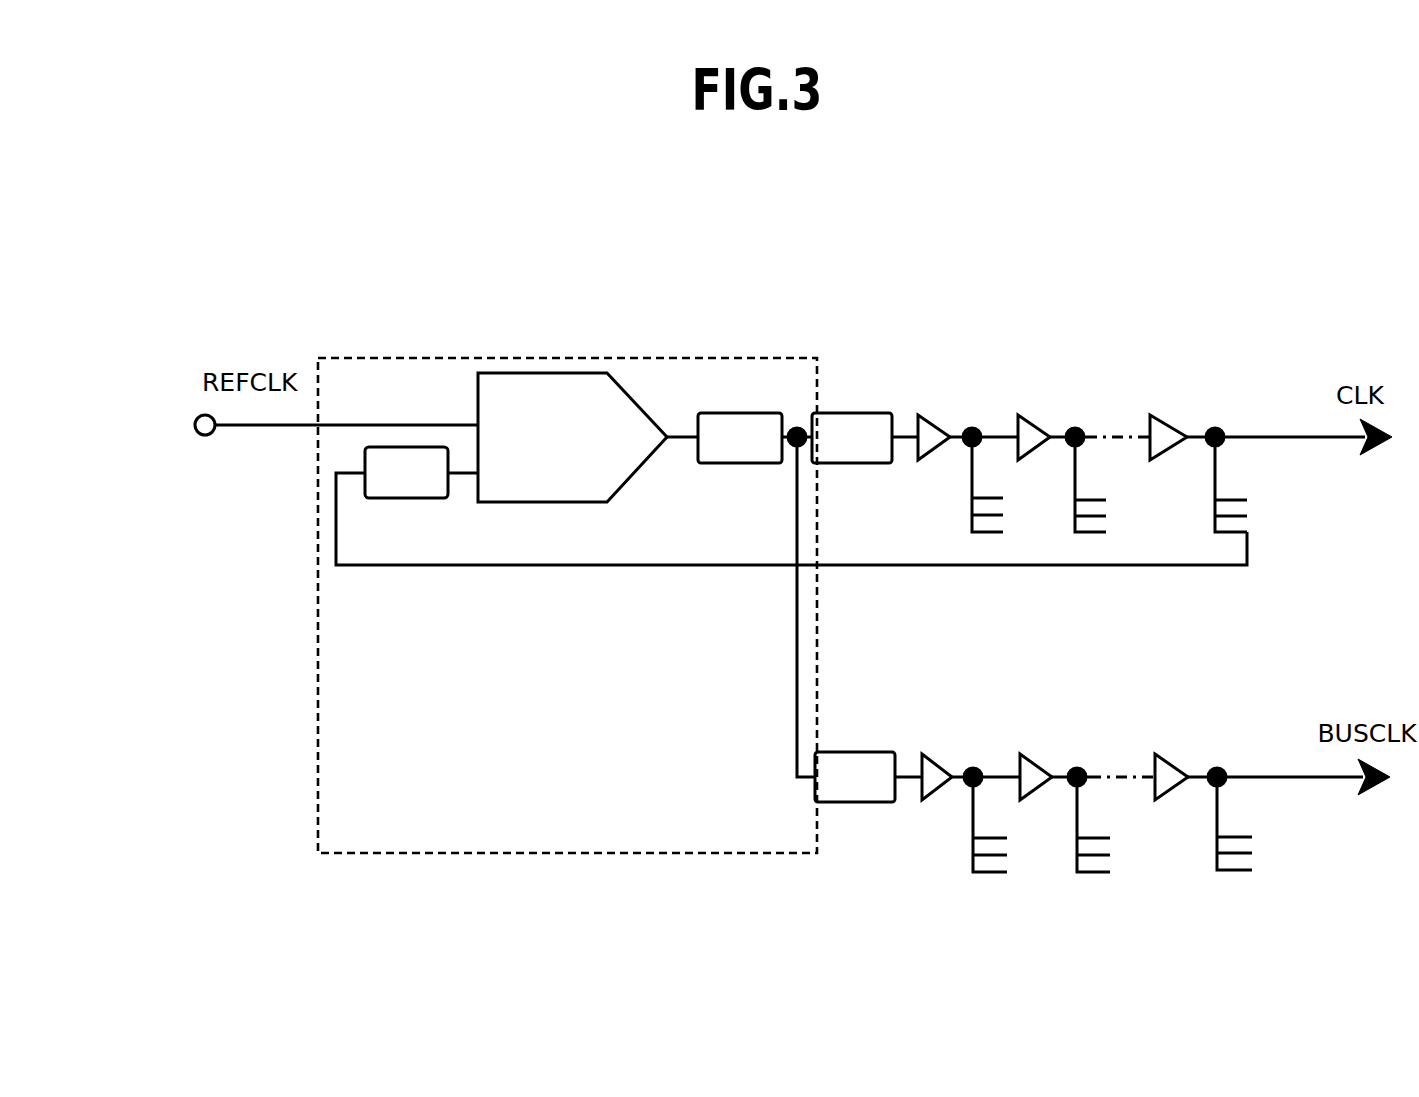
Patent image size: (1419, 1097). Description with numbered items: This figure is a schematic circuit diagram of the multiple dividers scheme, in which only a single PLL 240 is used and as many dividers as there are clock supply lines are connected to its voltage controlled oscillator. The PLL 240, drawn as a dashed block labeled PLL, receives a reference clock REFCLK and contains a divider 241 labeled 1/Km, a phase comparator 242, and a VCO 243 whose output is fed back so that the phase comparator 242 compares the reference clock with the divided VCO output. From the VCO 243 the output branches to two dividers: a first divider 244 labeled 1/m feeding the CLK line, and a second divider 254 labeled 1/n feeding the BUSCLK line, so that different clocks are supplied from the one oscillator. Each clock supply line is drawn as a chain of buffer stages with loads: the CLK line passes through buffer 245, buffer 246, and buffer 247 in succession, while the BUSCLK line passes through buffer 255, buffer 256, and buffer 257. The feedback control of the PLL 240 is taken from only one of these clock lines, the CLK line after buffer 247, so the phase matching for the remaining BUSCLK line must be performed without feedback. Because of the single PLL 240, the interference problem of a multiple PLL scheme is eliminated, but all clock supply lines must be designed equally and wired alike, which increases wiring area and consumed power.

The PLL circuit 240 is at (345, 357).
The 1/Km frequency divider 241 is at (397, 447).
The phase comparator 242 is at (513, 373).
The VCO 243 is at (730, 413).
The 1/m frequency divider 244 is at (855, 413).
The clock buffer 245 is at (935, 420).
The clock buffer 246 is at (1037, 422).
The clock buffer 247 is at (1168, 420).
The 1/n frequency divider 254 is at (833, 752).
The bus clock buffer 255 is at (938, 760).
The bus clock buffer 256 is at (1040, 760).
The bus clock buffer 257 is at (1180, 760).